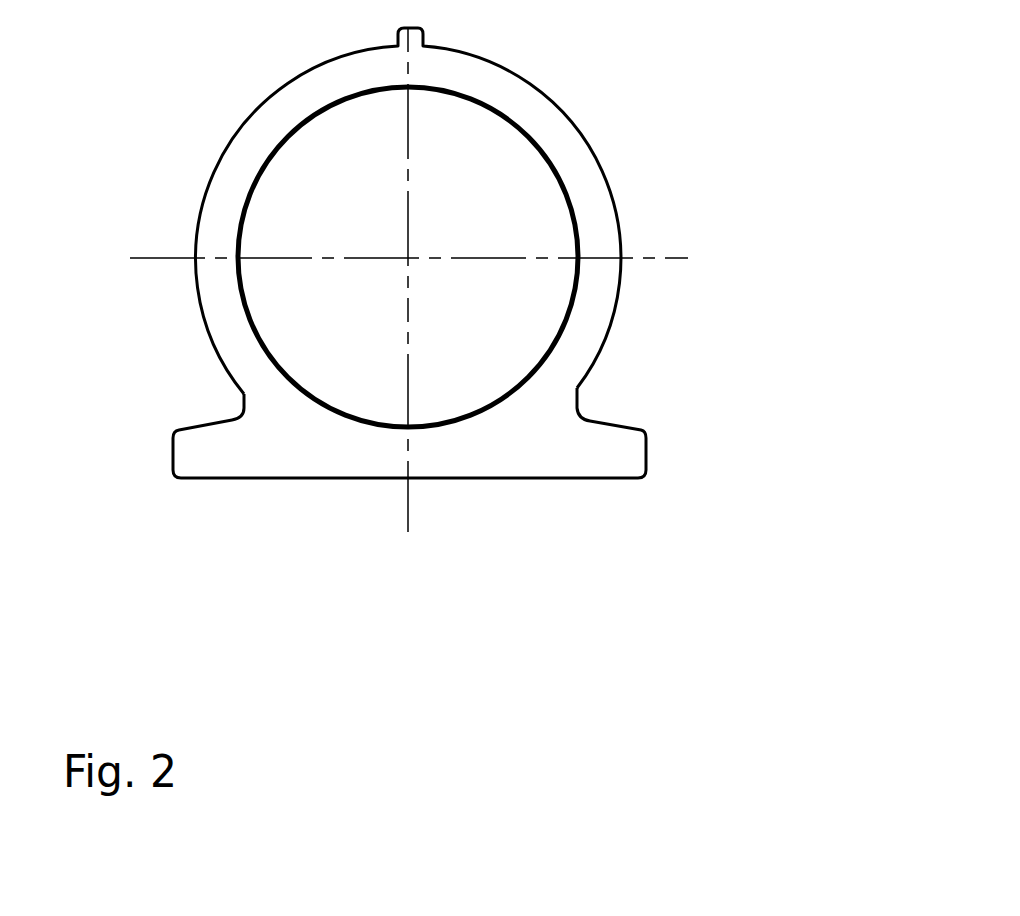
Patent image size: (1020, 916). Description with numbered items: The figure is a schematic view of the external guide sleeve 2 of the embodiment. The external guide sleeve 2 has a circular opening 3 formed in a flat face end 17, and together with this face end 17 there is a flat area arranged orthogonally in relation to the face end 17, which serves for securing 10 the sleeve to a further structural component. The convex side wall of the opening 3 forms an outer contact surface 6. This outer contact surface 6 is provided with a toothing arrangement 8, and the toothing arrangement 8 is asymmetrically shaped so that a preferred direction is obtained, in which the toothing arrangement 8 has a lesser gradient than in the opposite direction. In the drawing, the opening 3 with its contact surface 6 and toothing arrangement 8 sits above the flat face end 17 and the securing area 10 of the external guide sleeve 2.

The external guide sleeve 2 is at (470, 319).
The circular opening 3 is at (312, 198).
The outer contact surface 6 is at (577, 192).
The toothing arrangement 8 is at (537, 153).
The flat area for securing 10 is at (523, 488).
The flat face end 17 is at (545, 432).